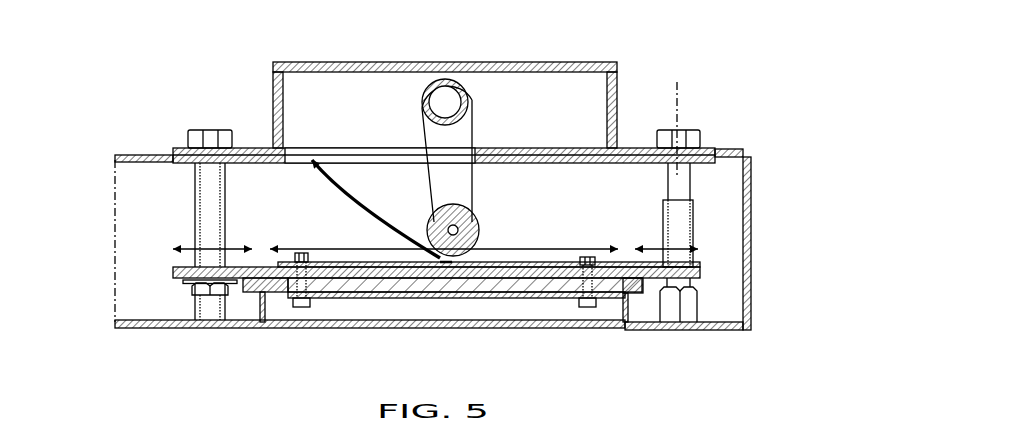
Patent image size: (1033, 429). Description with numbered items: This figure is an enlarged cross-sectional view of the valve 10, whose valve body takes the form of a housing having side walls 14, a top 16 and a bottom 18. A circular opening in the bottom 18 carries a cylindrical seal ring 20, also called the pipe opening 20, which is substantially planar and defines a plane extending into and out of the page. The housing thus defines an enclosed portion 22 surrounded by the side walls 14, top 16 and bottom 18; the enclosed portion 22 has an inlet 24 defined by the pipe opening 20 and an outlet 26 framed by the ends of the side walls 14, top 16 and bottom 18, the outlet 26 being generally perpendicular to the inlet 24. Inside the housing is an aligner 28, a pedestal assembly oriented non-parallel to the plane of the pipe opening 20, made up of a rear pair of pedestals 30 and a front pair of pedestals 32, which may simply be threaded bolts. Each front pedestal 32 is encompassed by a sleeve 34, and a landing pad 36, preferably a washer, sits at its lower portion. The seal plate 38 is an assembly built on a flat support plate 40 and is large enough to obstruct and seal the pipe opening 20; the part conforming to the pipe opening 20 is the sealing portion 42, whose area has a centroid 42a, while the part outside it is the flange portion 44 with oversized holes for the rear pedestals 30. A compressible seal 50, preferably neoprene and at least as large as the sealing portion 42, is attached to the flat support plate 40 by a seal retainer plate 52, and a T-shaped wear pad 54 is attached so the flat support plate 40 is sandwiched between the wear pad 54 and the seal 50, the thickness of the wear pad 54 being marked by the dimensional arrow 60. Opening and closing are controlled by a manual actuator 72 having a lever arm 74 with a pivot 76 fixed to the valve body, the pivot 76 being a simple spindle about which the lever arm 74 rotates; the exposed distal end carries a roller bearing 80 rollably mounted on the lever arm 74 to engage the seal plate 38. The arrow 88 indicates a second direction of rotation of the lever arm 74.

The valve 10 is at (815, 98).
The side walls 14 is at (748, 203).
The top 16 is at (738, 155).
The bottom 18 is at (713, 328).
The seal ring 20 is at (446, 318).
The enclosed portion 22 is at (722, 230).
The inlet 24 is at (433, 340).
The outlet 26 is at (108, 237).
The aligner 28 is at (172, 183).
The rear pair of pedestals 30 is at (684, 196).
The front pair of pedestals 32 is at (203, 255).
The sleeve 34 is at (222, 231).
The landing pad 36 is at (187, 282).
The seal plate 38 is at (247, 302).
The flat support plate 40 is at (288, 278).
The sealing portion 42 is at (348, 247).
The centroid 42a is at (446, 263).
The flange portion 44 is at (235, 247).
The seal 50 is at (328, 285).
The seal retainer plate 52 is at (345, 300).
The wear pad 54 is at (362, 276).
The dimensional arrow 60 is at (510, 250).
The actuator 72 is at (377, 97).
The lever arm 74 is at (465, 137).
The pivot 76 is at (450, 84).
The roller bearing 80 is at (478, 225).
The arrow 88 is at (356, 208).